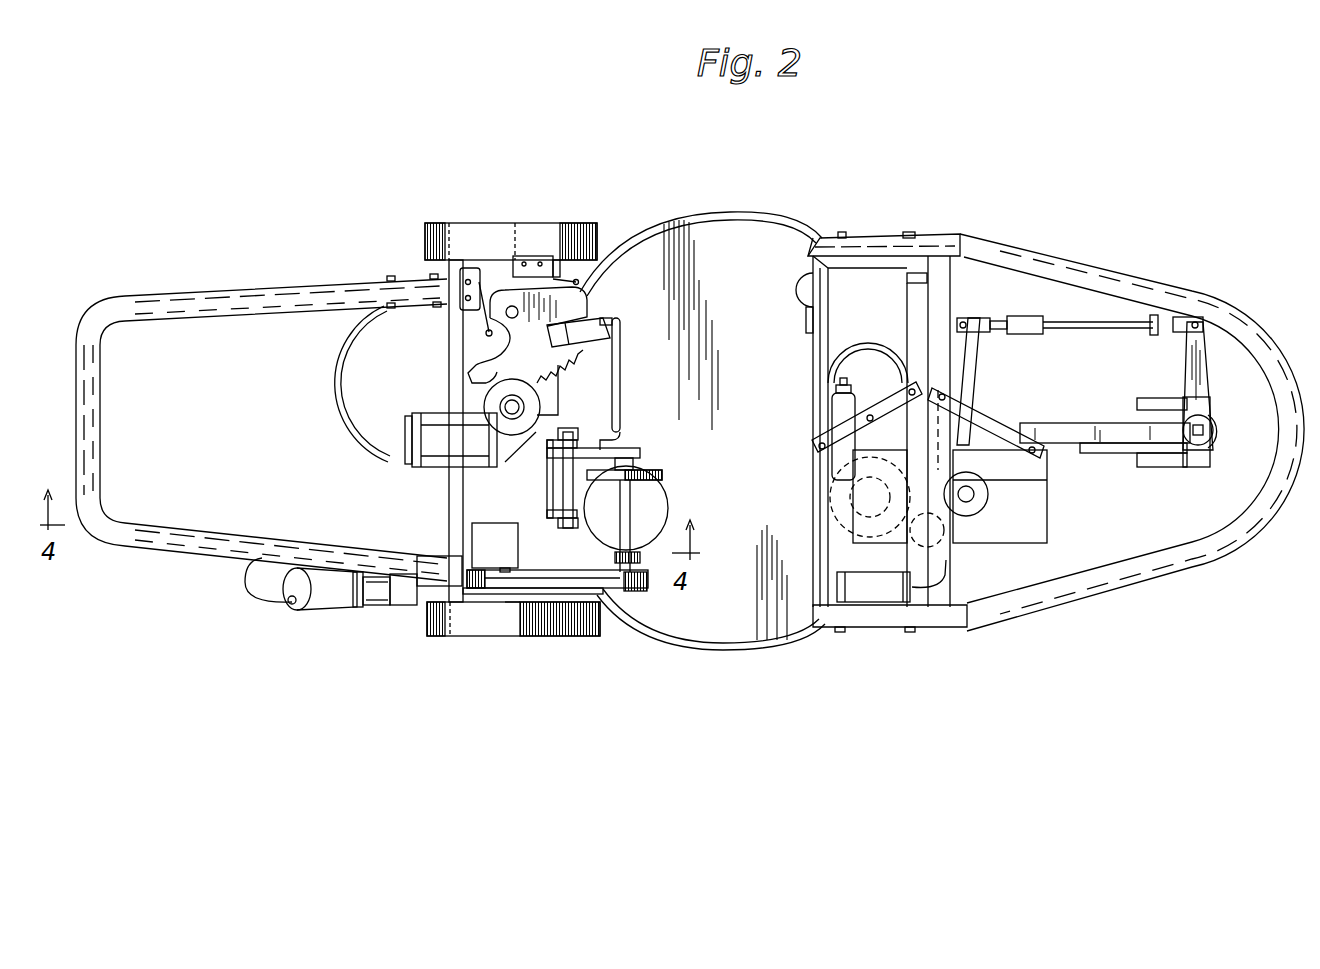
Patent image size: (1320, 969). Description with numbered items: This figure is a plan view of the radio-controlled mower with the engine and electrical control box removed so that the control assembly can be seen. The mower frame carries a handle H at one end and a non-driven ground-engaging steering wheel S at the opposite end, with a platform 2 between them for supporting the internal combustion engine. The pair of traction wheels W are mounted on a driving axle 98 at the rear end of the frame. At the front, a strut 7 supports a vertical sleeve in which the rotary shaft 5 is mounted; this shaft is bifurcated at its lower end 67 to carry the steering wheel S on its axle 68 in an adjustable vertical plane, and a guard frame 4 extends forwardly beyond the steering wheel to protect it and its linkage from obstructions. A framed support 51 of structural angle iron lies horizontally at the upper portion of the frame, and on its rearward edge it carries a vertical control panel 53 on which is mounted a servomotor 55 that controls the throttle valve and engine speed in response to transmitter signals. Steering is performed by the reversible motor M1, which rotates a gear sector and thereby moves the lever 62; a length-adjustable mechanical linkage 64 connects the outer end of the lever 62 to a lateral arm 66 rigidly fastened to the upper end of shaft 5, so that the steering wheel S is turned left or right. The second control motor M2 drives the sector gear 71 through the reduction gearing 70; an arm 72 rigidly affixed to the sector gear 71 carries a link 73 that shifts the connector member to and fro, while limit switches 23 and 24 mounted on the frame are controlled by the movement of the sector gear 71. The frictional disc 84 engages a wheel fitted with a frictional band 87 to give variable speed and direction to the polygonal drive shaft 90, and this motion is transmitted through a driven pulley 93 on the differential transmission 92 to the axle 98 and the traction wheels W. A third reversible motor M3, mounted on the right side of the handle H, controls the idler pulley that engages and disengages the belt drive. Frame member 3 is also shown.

The handle H is at (185, 303).
The traction wheels W is at (443, 222).
The platform 2 is at (738, 233).
The frame member 3 is at (907, 270).
The guard frame 4 is at (1068, 264).
The shaft 5 is at (1218, 440).
The strut 7 is at (1060, 425).
The steering wheel S is at (1097, 455).
The limit switch 23 is at (538, 258).
The limit switch 24 is at (472, 270).
The framed support 51 is at (845, 252).
The control panel 53 is at (808, 312).
The servomotor 55 is at (796, 288).
The lever 62 is at (969, 340).
The mechanical linkage 64 is at (1109, 329).
The lateral arm 66 is at (1204, 388).
The lower end of shaft 67 is at (1195, 468).
The axle 68 is at (1148, 468).
The reduction gearing 70 is at (512, 380).
The sector gear 71 is at (580, 305).
The arm 72 is at (598, 340).
The link 73 is at (621, 360).
The disc 84 is at (660, 500).
The frictional band 87 is at (656, 470).
The polygonal drive shaft 90 is at (632, 592).
The differential transmission 92 is at (480, 537).
The driven pulley 93 is at (528, 571).
The driving axle 98 is at (517, 602).
The motor M1 is at (822, 463).
The control motor M2 is at (441, 468).
The reversible electric motor M3 is at (331, 606).